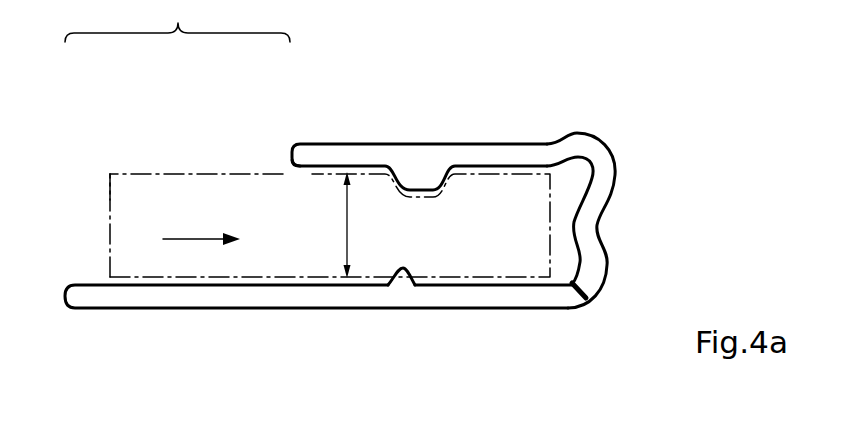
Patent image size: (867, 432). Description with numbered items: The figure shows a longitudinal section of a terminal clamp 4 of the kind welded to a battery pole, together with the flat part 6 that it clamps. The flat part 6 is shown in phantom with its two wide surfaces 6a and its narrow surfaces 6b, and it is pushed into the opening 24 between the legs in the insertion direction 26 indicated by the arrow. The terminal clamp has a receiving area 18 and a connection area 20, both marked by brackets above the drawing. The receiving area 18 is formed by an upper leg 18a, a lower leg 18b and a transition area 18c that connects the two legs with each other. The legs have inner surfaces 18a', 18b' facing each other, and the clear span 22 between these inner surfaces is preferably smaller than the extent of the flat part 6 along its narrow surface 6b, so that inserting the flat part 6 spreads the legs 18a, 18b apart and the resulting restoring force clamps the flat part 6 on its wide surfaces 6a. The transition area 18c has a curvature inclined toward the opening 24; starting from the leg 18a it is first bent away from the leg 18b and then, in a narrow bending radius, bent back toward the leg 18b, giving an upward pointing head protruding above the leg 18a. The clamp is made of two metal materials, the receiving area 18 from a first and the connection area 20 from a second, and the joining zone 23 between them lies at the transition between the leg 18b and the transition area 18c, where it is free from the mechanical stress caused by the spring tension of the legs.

The terminal clamp 4 is at (486, 157).
The flat part 6 is at (127, 226).
The wide surface 6a is at (162, 172).
The narrow surface 6b is at (110, 193).
The receiving area 18 is at (613, 42).
The leg 18a is at (395, 130).
The inner surface of leg 18a' is at (275, 126).
The leg 18b is at (318, 328).
The inner surface of leg 18b' is at (381, 328).
The transition area 18c is at (585, 233).
The connection area 20 is at (177, 21).
The clear span 22 is at (345, 226).
The joining zone 23 is at (568, 308).
The opening 24 is at (562, 218).
The insertion direction 26 is at (193, 240).